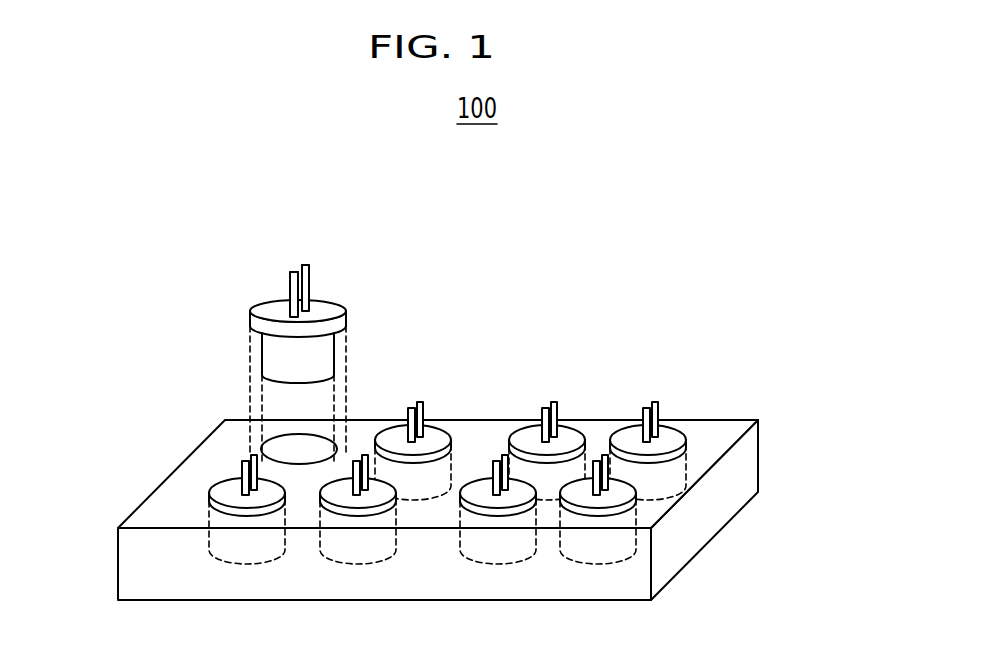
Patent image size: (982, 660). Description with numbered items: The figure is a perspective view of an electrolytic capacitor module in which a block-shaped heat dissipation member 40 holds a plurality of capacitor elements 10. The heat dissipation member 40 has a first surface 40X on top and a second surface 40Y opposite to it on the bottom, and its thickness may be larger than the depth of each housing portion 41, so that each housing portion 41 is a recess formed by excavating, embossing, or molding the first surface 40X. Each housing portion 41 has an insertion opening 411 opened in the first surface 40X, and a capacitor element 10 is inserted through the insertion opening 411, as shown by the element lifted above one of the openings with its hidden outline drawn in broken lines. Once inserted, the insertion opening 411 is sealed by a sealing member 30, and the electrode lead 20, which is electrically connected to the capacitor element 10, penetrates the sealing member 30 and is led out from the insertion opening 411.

The capacitor element 10 is at (280, 355).
The electrode lead 20 is at (552, 407).
The sealing member 30 is at (573, 435).
The heat dissipation member 40 is at (480, 507).
The first surface 40X is at (709, 430).
The second surface 40Y is at (673, 583).
The housing portion 41 is at (228, 543).
The insertion opening 411 is at (307, 447).